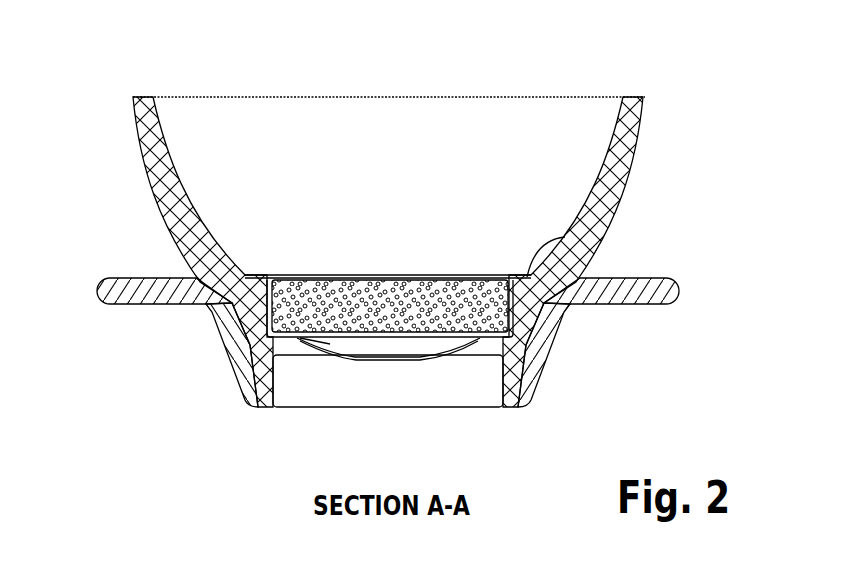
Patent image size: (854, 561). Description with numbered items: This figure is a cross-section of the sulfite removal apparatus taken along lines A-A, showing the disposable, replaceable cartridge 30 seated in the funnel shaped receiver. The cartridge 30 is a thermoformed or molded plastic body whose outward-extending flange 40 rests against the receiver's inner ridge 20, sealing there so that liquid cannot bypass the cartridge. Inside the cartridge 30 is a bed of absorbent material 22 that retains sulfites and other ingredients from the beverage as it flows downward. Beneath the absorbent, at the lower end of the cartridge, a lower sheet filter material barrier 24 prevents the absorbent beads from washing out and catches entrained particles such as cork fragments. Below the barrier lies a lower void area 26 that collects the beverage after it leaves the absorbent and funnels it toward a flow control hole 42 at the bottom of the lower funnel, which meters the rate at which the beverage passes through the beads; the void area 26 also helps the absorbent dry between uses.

The inner ridge 20 is at (210, 306).
The absorbent material 22 is at (397, 303).
The lower sheet filter material barrier 24 is at (433, 335).
The lower void area 26 is at (365, 342).
The replaceable cartridge 30 is at (232, 353).
The flange 40 is at (565, 237).
The flow control hole 42 is at (388, 357).